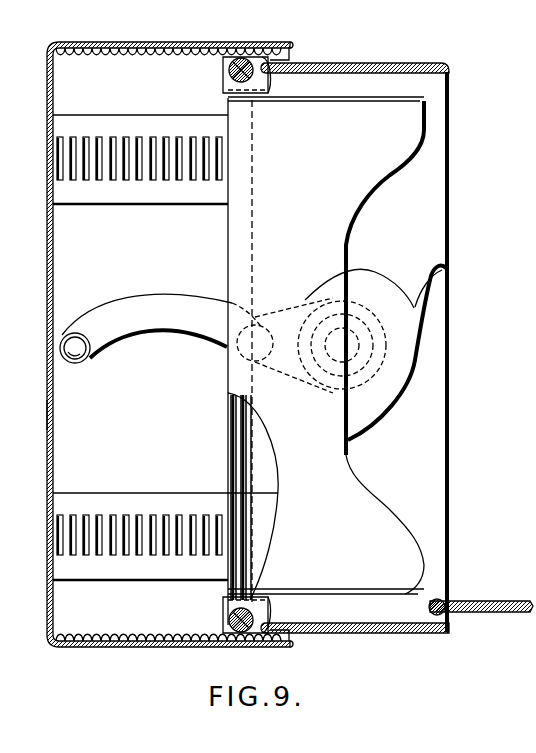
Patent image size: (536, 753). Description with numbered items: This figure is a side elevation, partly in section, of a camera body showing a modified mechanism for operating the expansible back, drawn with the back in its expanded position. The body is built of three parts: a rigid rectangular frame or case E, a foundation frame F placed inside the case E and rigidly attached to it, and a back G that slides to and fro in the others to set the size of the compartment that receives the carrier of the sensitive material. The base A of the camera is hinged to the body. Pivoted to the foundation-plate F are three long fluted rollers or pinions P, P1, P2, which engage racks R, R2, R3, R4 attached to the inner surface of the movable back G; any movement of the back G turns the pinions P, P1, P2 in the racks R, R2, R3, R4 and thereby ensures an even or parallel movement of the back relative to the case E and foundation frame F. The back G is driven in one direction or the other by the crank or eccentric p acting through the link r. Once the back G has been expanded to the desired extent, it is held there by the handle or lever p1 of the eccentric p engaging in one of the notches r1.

The rack R is at (170, 329).
The rack R2 is at (139, 169).
The rack R3 is at (139, 549).
The rack R4 is at (168, 657).
The fluted roller or pinion P is at (232, 77).
The fluted roller or pinion P1 is at (237, 496).
The fluted roller or pinion P2 is at (232, 616).
The rigid frame or case E is at (368, 358).
The foundation frame F is at (326, 361).
The back G is at (32, 415).
The link r is at (161, 327).
The notch r1 is at (359, 288).
The crank or eccentric p is at (311, 350).
The handle or lever p1 is at (409, 348).
The base A is at (481, 596).